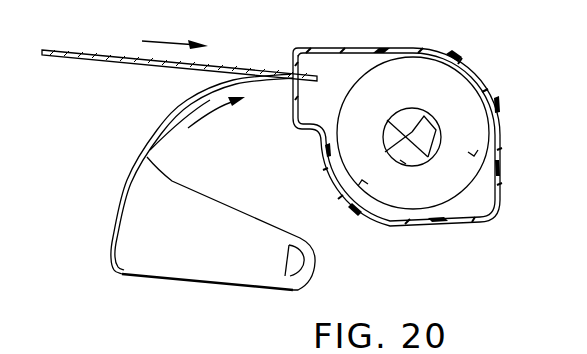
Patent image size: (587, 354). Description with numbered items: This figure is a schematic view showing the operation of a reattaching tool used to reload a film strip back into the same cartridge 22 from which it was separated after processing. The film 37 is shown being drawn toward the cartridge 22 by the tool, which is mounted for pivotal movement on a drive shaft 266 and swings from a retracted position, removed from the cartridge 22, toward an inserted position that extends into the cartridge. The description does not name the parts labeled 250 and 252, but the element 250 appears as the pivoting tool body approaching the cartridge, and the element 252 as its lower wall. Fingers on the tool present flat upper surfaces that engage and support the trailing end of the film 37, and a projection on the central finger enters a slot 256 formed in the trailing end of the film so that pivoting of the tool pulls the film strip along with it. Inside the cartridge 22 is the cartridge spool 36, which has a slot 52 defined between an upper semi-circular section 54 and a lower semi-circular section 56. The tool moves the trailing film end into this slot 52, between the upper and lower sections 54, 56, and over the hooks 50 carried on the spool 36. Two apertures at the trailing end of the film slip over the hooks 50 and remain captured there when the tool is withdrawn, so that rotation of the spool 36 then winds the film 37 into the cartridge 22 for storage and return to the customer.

The cartridge 22 is at (502, 190).
The cartridge spool 36 is at (403, 80).
The film 37 is at (103, 60).
The hooks 50 is at (441, 133).
The slot 52 is at (390, 150).
The upper semi-circular section 54 is at (420, 115).
The lower semi-circular section 56 is at (403, 158).
The cap 250 is at (161, 204).
The cap wall 252 is at (138, 257).
The slot 256 is at (270, 106).
The drive shaft 266 is at (283, 267).